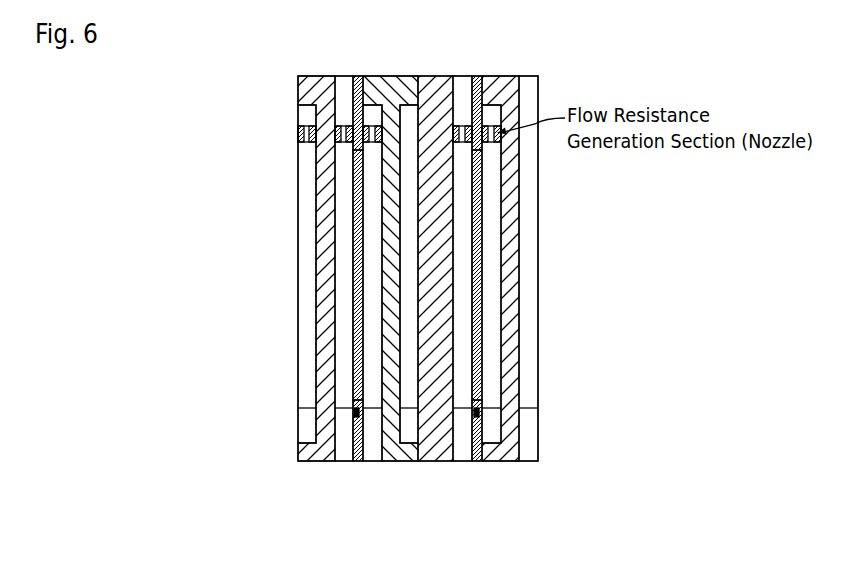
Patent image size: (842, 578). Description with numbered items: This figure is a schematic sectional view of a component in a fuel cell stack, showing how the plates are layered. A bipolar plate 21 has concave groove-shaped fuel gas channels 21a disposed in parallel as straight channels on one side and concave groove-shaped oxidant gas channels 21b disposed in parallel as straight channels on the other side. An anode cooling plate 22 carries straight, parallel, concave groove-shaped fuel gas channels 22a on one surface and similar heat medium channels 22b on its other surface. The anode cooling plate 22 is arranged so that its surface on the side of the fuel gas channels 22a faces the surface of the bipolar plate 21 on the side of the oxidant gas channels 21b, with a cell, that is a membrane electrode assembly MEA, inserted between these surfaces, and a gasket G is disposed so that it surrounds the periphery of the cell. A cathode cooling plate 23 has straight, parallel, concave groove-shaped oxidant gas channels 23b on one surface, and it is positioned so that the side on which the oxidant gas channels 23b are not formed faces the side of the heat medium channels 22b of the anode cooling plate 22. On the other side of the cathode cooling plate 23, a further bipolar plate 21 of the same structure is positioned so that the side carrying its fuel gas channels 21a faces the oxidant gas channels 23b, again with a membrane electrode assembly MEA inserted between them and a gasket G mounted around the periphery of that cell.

The bipolar plate 21 is at (293, 461).
The fuel gas channel 21a is at (573, 357).
The oxidant gas channel 21b is at (340, 301).
The anode cooling plate 22 is at (387, 468).
The fuel gas channels 22a is at (368, 335).
The heat medium channels 22b is at (408, 351).
The cathode cooling plate 23 is at (441, 468).
The oxidant gas channels 23b is at (465, 293).
The gasket G is at (360, 76).
The membrane electrode assembly MEA is at (357, 256).